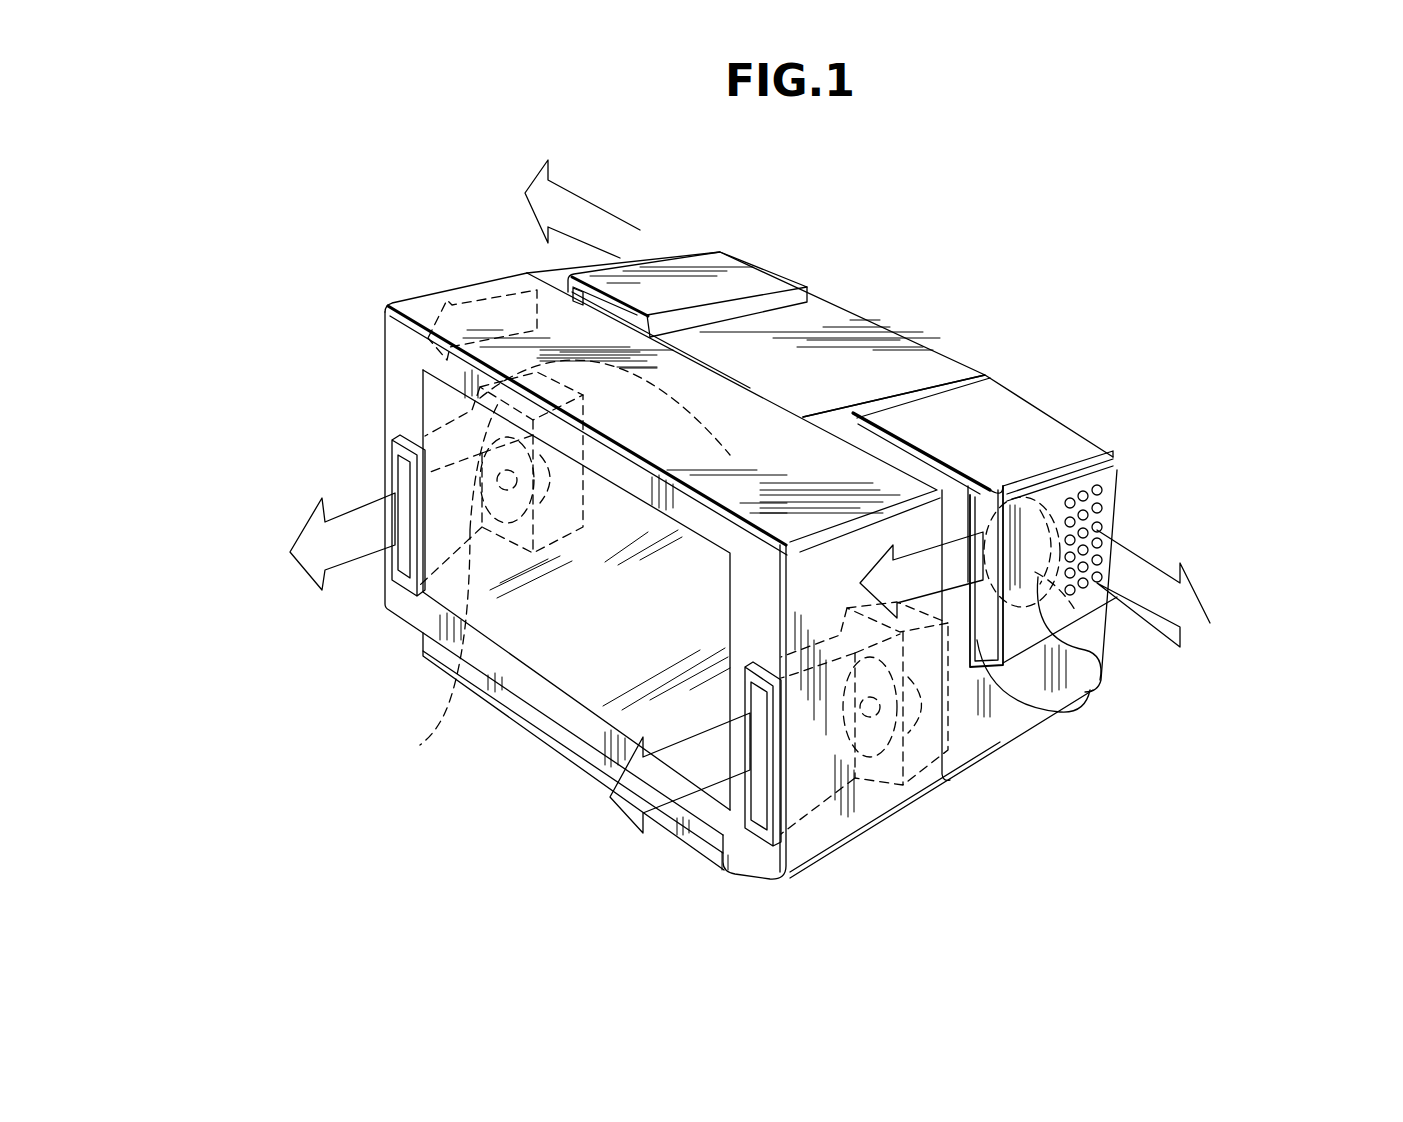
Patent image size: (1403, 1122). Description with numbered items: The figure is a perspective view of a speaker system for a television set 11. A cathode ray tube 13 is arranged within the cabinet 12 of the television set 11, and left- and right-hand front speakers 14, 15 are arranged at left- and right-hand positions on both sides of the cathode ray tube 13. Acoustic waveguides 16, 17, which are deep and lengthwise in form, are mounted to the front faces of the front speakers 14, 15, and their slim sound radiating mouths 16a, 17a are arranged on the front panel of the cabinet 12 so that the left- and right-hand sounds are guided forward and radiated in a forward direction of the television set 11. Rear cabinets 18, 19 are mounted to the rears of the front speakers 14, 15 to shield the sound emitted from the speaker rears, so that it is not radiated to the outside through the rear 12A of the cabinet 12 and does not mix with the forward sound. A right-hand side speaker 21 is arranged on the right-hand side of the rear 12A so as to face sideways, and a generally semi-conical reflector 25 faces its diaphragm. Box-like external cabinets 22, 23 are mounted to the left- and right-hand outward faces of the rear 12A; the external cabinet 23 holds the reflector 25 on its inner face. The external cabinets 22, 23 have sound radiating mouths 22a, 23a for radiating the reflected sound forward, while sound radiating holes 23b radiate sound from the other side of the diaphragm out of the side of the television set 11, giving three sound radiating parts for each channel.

The television set 11 is at (948, 333).
The cabinet 12 is at (735, 385).
The rear of the cabinet 12A is at (995, 742).
The cathode ray tube 13 is at (548, 742).
The left-hand front speaker 14 is at (498, 520).
The right-hand front speaker 15 is at (868, 738).
The acoustic waveguide 16 is at (470, 452).
The sound radiating mouth 16a is at (397, 562).
The acoustic waveguide 17 is at (800, 800).
The sound radiating mouth 17a is at (748, 814).
The rear cabinet 18 is at (567, 522).
The rear cabinet 19 is at (915, 760).
The right-hand side speaker 21 is at (1030, 500).
The external cabinet 22 is at (703, 265).
The sound radiating mouth 22a is at (570, 282).
The external cabinet 23 is at (1112, 480).
The sound radiating mouth 23a is at (1030, 705).
The sound radiating hole 23b is at (1086, 512).
The reflector 25 is at (1098, 662).